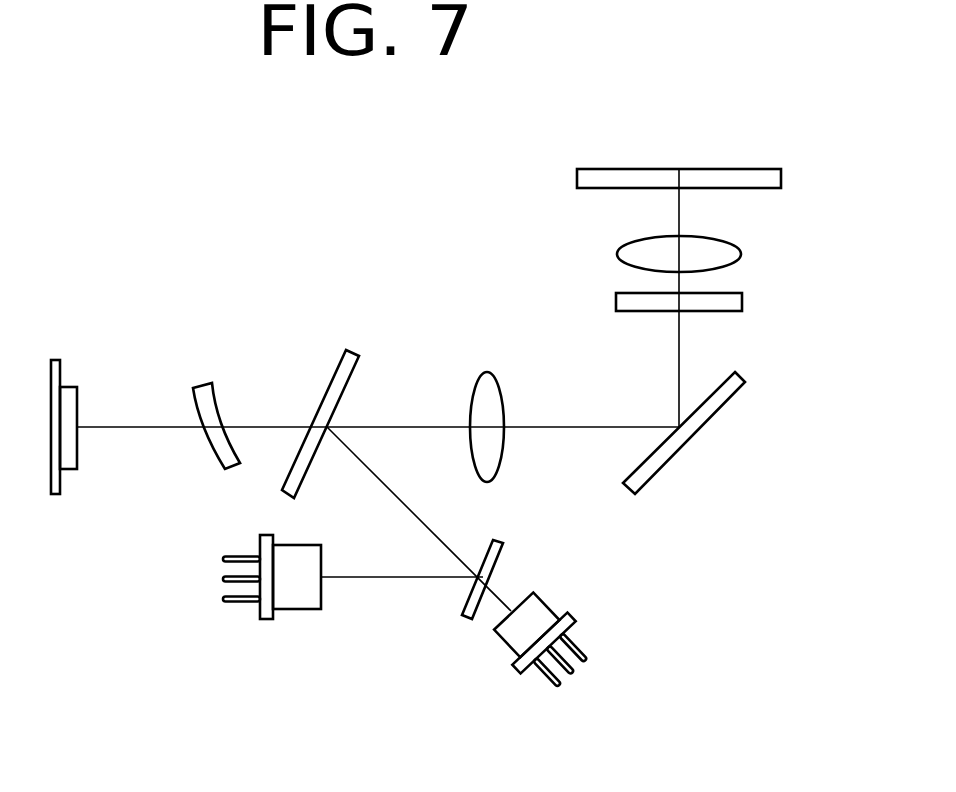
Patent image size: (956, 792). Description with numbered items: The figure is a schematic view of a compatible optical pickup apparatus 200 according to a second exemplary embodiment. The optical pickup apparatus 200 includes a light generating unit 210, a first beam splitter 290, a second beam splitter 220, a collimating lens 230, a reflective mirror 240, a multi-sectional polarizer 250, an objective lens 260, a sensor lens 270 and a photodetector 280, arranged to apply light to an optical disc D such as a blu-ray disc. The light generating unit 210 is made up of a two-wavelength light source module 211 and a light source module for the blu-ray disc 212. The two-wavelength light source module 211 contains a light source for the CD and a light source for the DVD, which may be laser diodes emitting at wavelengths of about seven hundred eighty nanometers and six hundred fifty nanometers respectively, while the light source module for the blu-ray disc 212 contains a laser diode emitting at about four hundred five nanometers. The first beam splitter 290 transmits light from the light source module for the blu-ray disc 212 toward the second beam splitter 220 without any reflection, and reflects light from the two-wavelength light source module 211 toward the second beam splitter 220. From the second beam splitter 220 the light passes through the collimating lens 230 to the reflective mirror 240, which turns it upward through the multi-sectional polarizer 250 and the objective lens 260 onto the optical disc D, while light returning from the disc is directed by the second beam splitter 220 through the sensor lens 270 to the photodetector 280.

The optical pickup apparatus 200 is at (91, 123).
The light generating unit 210 is at (411, 649).
The two-wavelength light source module 211 is at (297, 611).
The light source module for the blu-ray disc 212 is at (514, 666).
The second beam splitter 220 is at (353, 350).
The collimating lens 230 is at (488, 372).
The reflective mirror 240 is at (745, 375).
The multi-sectional polarizer 250 is at (742, 300).
The objective lens 260 is at (741, 250).
The sensor lens 270 is at (196, 380).
The photodetector 280 is at (72, 387).
The first beam splitter 290 is at (503, 543).
The optical disc D is at (781, 180).